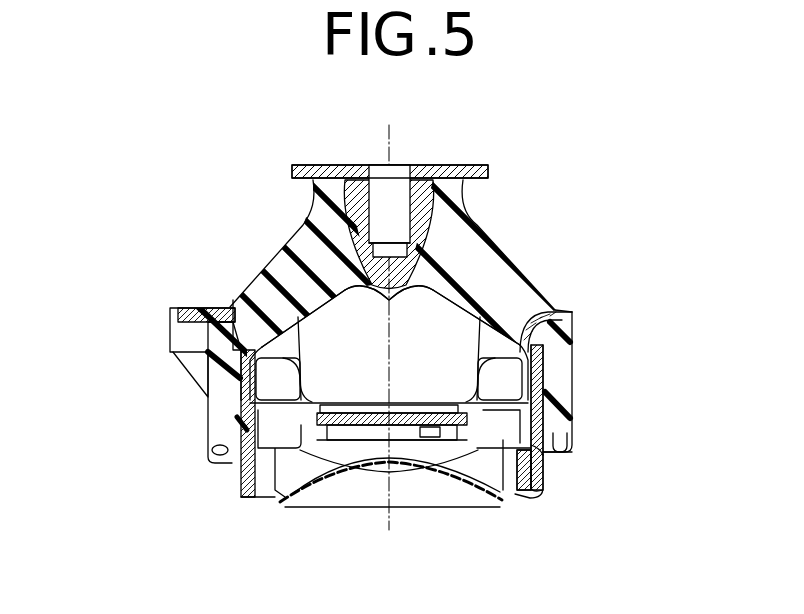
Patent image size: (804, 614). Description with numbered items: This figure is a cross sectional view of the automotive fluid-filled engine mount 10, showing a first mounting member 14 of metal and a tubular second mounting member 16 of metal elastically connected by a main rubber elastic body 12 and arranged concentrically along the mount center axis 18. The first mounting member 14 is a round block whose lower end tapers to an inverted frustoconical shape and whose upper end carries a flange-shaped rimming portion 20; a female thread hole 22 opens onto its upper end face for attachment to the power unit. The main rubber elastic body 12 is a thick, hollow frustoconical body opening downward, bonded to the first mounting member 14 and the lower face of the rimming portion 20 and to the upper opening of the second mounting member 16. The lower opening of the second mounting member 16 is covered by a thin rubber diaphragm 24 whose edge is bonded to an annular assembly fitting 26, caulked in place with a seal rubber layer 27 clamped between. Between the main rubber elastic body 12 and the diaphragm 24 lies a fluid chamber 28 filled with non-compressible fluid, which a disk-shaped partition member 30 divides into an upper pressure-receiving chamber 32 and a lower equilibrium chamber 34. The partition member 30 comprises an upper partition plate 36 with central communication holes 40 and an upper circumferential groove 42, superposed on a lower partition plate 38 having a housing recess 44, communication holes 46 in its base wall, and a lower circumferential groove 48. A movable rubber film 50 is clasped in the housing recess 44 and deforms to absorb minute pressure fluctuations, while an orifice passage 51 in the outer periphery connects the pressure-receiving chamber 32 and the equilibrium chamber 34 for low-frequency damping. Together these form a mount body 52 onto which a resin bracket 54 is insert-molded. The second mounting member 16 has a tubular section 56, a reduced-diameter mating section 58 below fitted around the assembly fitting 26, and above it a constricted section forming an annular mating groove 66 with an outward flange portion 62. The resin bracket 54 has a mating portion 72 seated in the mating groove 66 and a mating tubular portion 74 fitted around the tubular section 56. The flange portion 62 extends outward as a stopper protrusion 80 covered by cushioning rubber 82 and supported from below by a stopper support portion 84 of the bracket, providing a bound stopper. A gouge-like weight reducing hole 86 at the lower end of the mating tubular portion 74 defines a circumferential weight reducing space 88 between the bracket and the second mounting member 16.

The engine mount 10 is at (533, 224).
The main rubber elastic body 12 is at (290, 268).
The first mounting member 14 is at (455, 160).
The second mounting member 16 is at (547, 372).
The mount center axis 18 is at (440, 488).
The rimming portion 20 is at (322, 168).
The female thread hole 22 is at (380, 166).
The diaphragm 24 is at (330, 487).
The assembly fitting 26 is at (548, 470).
The seal rubber layer 27 is at (245, 394).
The fluid chamber 28 is at (378, 323).
The partition member 30 is at (400, 400).
The pressure-receiving chamber 32 is at (292, 296).
The equilibrium chamber 34 is at (366, 468).
The upper partition plate 36 is at (497, 292).
The lower partition plate 38 is at (282, 500).
The communication holes 40 is at (344, 400).
The upper circumferential groove 42 is at (287, 360).
The housing recess 44 is at (390, 467).
The communication holes 46 is at (425, 437).
The lower circumferential groove 48 is at (505, 480).
The movable rubber film 50 is at (367, 403).
The orifice passage 51 is at (236, 402).
The mount body 52 is at (236, 390).
The resin bracket 54 is at (574, 404).
The tubular section 56 is at (544, 398).
The reduced-diameter mating section 58 is at (543, 466).
The flange portion 62 is at (563, 320).
The mating groove 66 is at (207, 320).
The mating portion 72 is at (548, 342).
The mating tubular portion 74 is at (212, 365).
The stopper protrusion 80 is at (172, 334).
The cushioning rubber 82 is at (173, 303).
The stopper support portion 84 is at (182, 337).
The weight reducing hole 86 is at (212, 456).
The weight reducing space 88 is at (572, 450).